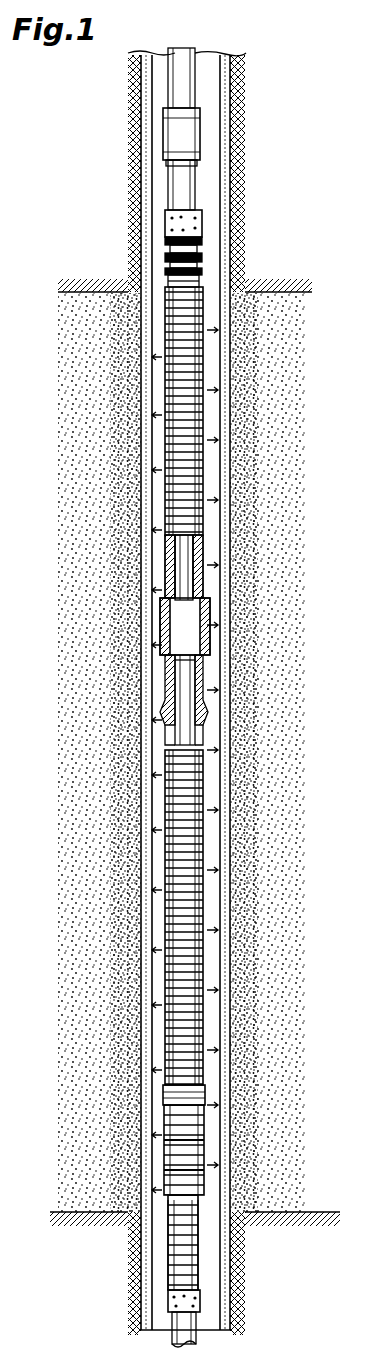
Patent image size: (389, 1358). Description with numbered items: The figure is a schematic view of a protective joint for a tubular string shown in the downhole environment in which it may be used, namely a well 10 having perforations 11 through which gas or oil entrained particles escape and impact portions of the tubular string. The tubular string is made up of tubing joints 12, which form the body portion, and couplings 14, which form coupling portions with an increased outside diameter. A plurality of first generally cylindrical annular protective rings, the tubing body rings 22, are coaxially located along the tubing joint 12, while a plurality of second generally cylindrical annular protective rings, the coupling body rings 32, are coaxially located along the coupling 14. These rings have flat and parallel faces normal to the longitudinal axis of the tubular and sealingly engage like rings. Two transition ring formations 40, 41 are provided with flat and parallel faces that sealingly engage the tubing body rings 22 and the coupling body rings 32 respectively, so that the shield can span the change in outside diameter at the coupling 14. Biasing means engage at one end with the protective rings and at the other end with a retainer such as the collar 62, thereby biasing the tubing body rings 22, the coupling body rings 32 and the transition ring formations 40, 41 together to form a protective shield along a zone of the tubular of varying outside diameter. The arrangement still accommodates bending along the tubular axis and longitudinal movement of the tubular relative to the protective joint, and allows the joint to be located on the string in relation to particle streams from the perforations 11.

The well 10 is at (218, 82).
The perforations 11 is at (225, 1165).
The tubing joint 12 is at (180, 188).
The coupling 14 is at (195, 148).
The collar 62 is at (203, 228).
The tubing body rings 22 is at (203, 335).
The transition ring formation 40 is at (213, 568).
The transition ring formation 41 is at (205, 722).
The coupling body rings 32 is at (208, 1140).